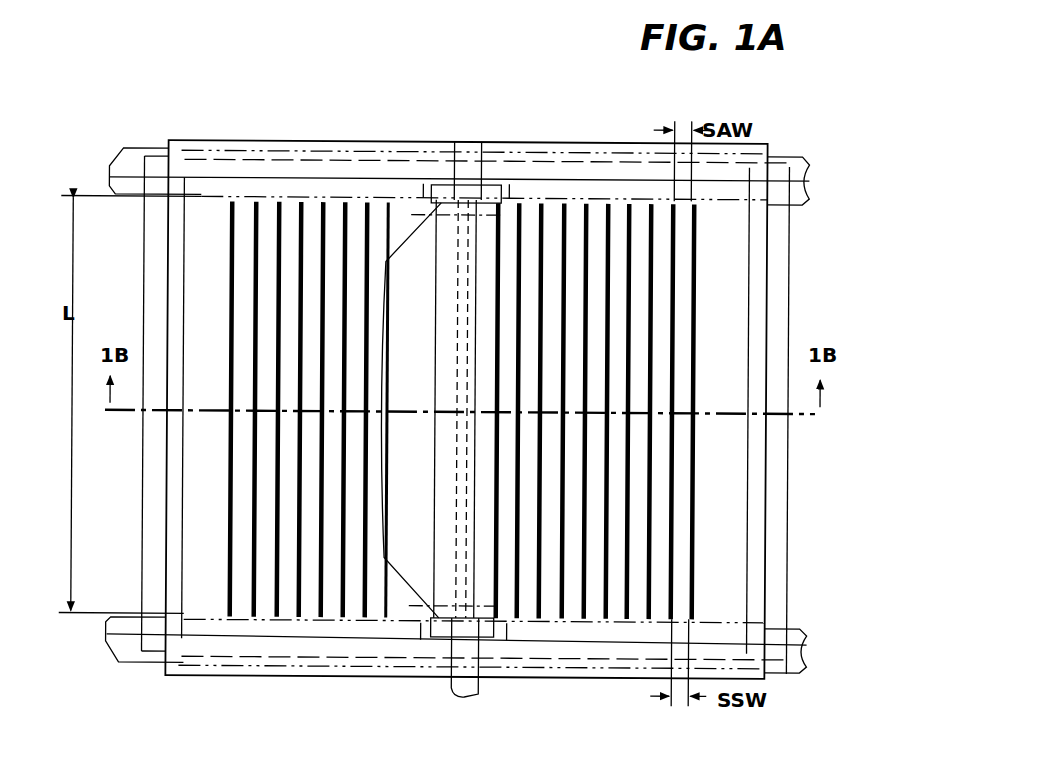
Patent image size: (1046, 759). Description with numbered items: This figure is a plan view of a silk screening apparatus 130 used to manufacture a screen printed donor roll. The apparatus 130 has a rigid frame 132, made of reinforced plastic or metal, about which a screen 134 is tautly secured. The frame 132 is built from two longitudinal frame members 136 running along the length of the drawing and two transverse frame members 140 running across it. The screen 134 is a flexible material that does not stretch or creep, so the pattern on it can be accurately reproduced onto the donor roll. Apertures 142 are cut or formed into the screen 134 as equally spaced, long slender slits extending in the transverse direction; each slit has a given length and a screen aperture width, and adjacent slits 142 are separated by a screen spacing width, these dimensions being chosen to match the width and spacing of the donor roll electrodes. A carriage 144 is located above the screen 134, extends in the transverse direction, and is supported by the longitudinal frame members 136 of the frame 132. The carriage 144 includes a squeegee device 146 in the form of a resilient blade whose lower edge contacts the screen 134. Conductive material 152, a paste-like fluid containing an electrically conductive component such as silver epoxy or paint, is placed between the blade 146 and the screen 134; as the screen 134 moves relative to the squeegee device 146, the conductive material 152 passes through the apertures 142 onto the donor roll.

The silk screening apparatus 130 is at (227, 88).
The frame 132 is at (773, 577).
The screen 134 is at (733, 556).
The longitudinal frame members 136 is at (268, 141).
The transverse frame members 140 is at (768, 243).
The apertures 142 is at (675, 493).
The carriage 144 is at (469, 131).
The squeegee device 146 is at (482, 186).
The conductive material 152 is at (410, 232).